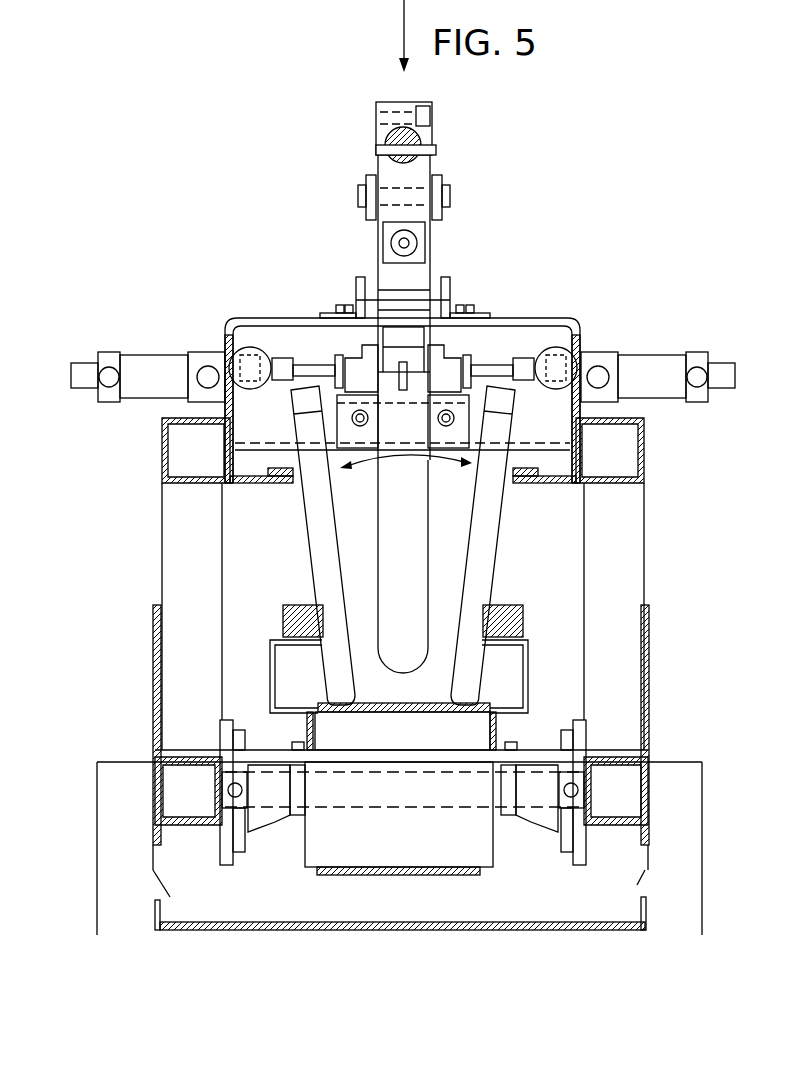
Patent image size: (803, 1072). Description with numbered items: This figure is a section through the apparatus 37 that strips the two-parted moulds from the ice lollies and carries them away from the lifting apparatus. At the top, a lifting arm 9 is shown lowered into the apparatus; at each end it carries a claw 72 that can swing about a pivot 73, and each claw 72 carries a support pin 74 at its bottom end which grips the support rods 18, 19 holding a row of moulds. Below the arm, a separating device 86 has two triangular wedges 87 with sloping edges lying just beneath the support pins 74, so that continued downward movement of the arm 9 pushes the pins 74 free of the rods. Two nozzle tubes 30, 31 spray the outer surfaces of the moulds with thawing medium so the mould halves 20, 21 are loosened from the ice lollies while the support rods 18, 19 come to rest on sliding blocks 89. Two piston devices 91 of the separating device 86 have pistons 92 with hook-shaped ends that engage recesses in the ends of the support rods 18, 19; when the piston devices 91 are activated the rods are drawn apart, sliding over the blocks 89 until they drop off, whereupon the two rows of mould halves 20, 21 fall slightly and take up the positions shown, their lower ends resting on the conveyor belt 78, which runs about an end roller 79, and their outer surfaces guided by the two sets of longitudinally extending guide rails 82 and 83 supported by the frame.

The lifting arm 9 is at (418, 141).
The pivot 73 is at (413, 204).
The claw 72 is at (431, 254).
The support pin 74 is at (392, 298).
The triangular wedges 87 is at (356, 287).
The device for removing the moulds 86 is at (222, 314).
The apparatus for removing the moulds 37 is at (538, 298).
The tube 30 is at (232, 345).
The tube 31 is at (557, 350).
The piston device 91 is at (152, 370).
The piston 92 is at (306, 372).
The support rod 18 is at (388, 352).
The support rod 19 is at (415, 358).
The guide rails 82 is at (294, 483).
The sliding block 89 is at (356, 440).
The mould half 20 is at (325, 528).
The mould half 21 is at (489, 545).
The guide rails 83 is at (284, 618).
The conveyor belt 78 is at (425, 700).
The end roller 79 is at (478, 835).